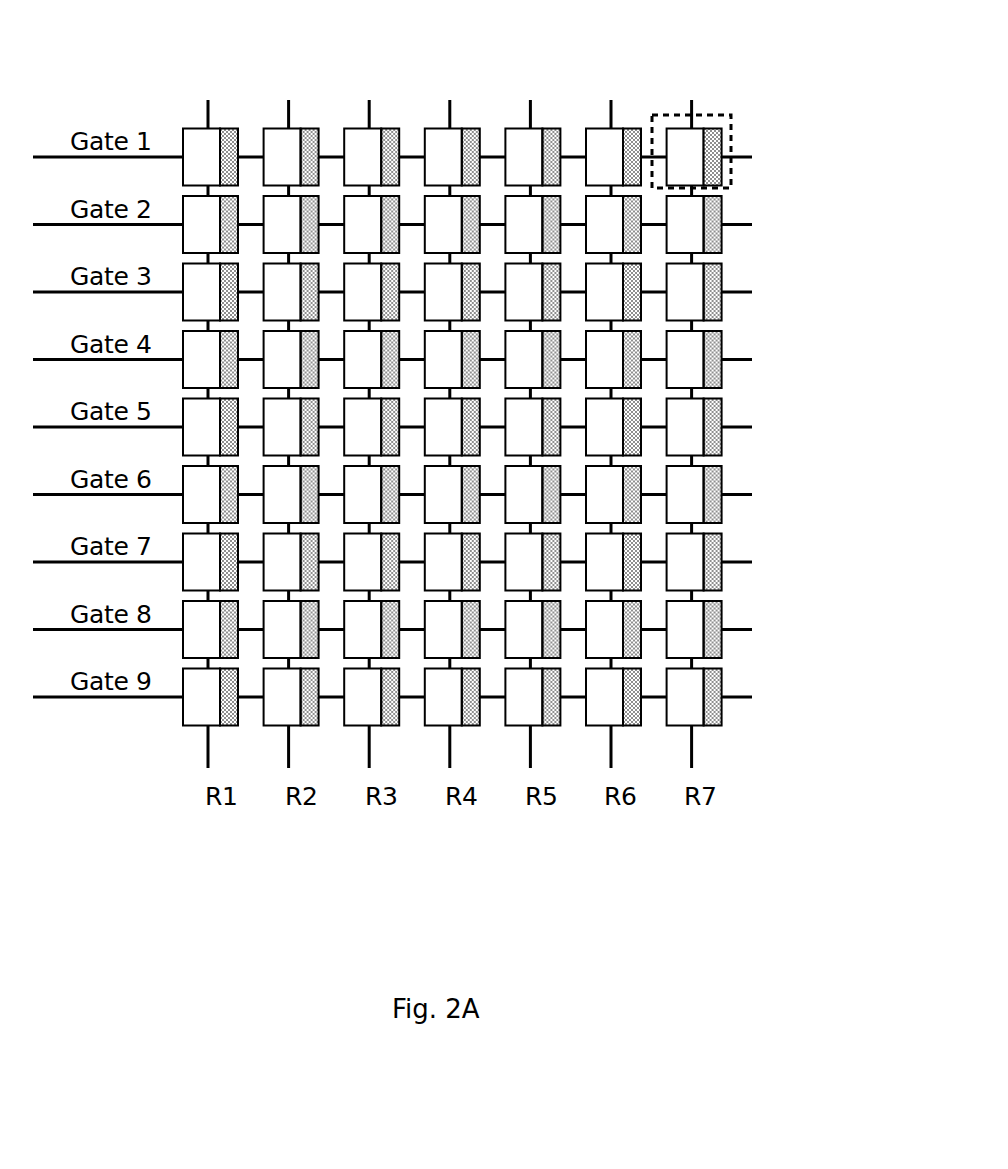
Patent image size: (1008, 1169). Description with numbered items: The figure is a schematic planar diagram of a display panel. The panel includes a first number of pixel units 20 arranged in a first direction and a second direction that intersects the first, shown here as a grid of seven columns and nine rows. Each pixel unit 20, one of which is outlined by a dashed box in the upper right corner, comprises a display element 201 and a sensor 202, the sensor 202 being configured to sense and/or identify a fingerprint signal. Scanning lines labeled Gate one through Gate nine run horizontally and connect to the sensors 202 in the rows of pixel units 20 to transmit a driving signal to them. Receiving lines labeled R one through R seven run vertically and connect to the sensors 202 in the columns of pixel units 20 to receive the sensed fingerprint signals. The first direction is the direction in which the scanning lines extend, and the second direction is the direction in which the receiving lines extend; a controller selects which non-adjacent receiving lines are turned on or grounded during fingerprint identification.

The pixel unit 20 is at (732, 173).
The display element 201 is at (678, 127).
The sensor 202 is at (712, 140).